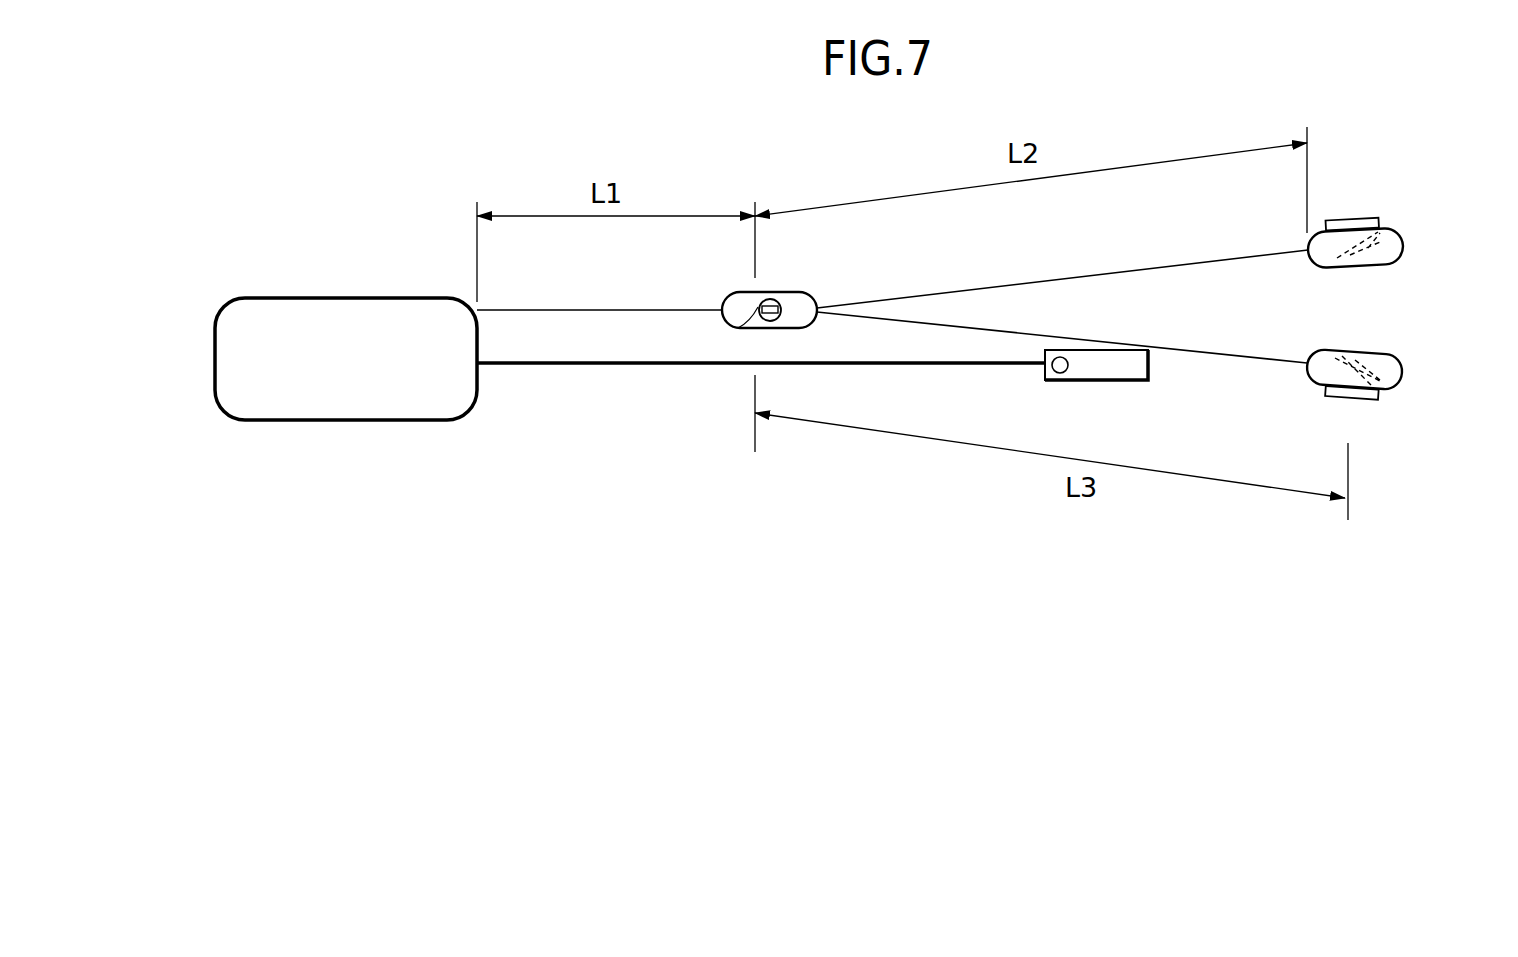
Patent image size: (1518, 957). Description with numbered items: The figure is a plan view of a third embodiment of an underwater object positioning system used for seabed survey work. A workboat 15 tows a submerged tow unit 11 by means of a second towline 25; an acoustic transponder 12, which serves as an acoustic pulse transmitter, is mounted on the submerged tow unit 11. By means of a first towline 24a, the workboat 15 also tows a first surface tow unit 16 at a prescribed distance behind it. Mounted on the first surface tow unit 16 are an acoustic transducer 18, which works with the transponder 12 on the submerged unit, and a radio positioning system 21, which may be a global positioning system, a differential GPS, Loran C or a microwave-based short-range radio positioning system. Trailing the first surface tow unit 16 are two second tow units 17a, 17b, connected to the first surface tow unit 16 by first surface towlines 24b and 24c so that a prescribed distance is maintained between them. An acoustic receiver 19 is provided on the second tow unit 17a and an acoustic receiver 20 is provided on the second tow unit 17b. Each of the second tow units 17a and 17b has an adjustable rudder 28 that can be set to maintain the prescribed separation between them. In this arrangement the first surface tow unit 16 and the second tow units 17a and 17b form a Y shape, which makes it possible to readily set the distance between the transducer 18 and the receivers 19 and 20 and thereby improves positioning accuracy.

The workboat 15 is at (347, 298).
The first towline 24a is at (598, 308).
The second towline 25 is at (598, 367).
The first surface tow unit 16 is at (788, 292).
The radio positioning system 21 is at (783, 308).
The acoustic transducer 18 is at (738, 328).
The first surface towline 24b is at (1098, 275).
The first surface towline 24c is at (1220, 346).
The submerged tow unit 11 is at (1138, 380).
The acoustic transponder 12 is at (1057, 380).
The second tow unit 17a is at (1405, 248).
The second tow unit 17b is at (1403, 377).
The acoustic receiver 19 is at (1352, 218).
The acoustic receiver 20 is at (1368, 400).
The adjustable rudder 28 is at (1368, 268).